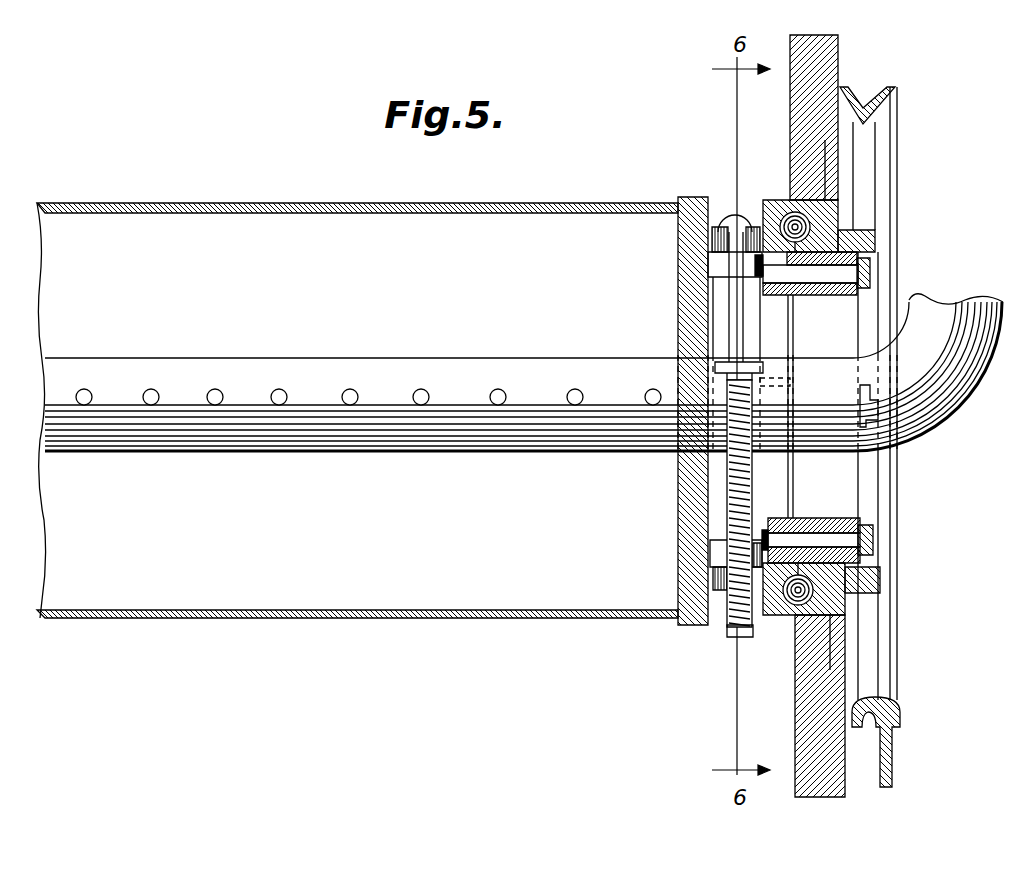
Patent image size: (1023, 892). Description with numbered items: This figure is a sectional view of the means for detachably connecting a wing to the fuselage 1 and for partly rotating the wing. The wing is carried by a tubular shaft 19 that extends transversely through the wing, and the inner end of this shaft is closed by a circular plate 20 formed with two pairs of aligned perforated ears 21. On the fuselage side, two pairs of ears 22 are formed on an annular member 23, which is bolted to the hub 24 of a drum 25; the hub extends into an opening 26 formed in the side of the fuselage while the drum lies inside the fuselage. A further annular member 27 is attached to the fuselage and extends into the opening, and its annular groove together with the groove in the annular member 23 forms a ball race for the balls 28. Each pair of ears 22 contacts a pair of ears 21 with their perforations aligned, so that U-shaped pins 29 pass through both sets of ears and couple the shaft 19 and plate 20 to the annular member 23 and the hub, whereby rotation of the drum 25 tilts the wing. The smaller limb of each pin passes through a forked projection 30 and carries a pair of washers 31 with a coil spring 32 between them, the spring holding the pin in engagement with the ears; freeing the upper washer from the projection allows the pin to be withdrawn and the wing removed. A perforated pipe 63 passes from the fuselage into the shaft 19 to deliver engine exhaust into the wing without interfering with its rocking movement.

The fuselage 1 is at (800, 717).
The shaft 19 is at (492, 617).
The circular plate 20 is at (690, 495).
The perforated ears 21 is at (718, 264).
The ears 22 is at (752, 230).
The annular member 23 is at (785, 617).
The hub 24 is at (840, 292).
The drum 25 is at (862, 205).
The opening 26 is at (808, 200).
The annular member 27 is at (845, 592).
The balls 28 is at (812, 226).
The pins 29 is at (727, 466).
The forked projection 30 is at (713, 368).
The washers 31 is at (790, 383).
The coil spring 32 is at (750, 515).
The perforated pipes 63 is at (413, 425).